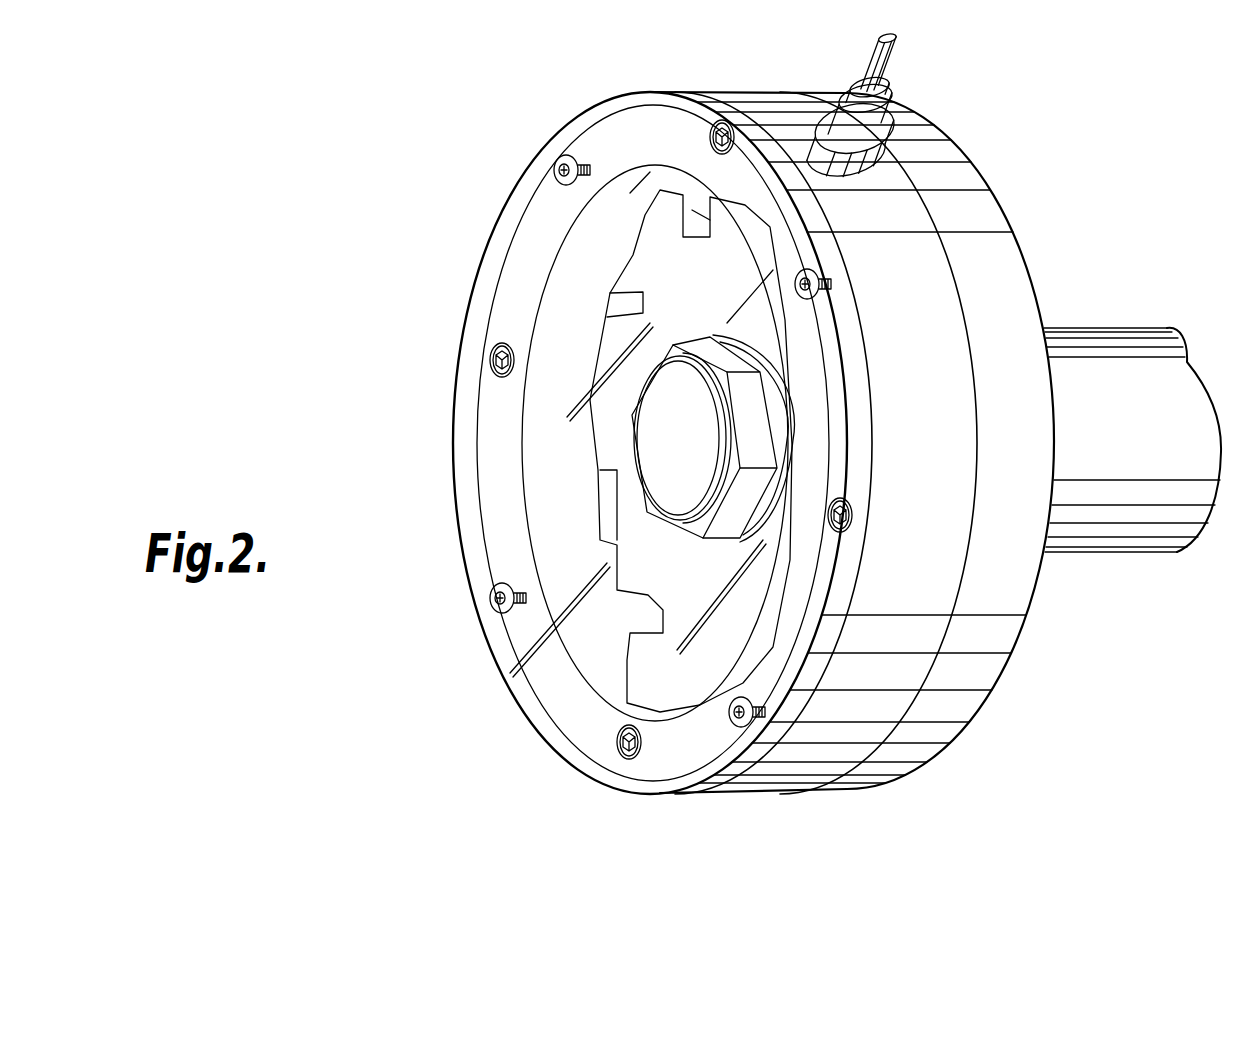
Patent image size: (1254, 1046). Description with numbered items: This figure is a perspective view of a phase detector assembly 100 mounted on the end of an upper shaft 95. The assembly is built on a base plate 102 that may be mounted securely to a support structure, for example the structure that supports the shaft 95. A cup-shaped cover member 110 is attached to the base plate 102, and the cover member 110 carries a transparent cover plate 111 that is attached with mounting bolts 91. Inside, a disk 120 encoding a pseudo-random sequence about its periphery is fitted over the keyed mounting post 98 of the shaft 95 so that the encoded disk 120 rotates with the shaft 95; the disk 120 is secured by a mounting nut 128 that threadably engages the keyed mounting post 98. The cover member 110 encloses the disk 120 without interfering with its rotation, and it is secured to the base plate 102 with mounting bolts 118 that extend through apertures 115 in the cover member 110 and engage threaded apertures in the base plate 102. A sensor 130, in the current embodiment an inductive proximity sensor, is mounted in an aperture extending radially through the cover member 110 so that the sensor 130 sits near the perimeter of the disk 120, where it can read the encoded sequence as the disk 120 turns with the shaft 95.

The phase detector assembly 100 is at (398, 458).
The base plate 102 is at (985, 662).
The cover member 110 is at (748, 792).
The transparent cover plate 111 is at (462, 492).
The disk 120 is at (645, 603).
The keyed mounting post 98 is at (650, 445).
The mounting nut 128 is at (740, 530).
The upper shaft 95 is at (1131, 560).
The sensor 130 is at (905, 128).
The mounting bolts 91 is at (565, 160).
The apertures 115 is at (712, 128).
The mounting bolts 118 is at (727, 130).